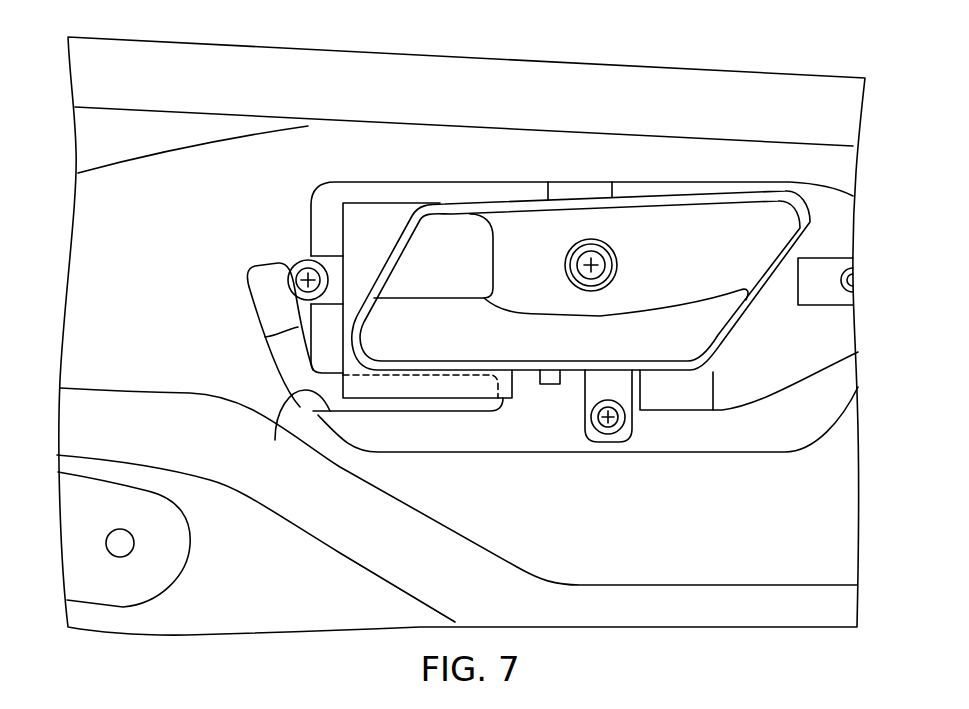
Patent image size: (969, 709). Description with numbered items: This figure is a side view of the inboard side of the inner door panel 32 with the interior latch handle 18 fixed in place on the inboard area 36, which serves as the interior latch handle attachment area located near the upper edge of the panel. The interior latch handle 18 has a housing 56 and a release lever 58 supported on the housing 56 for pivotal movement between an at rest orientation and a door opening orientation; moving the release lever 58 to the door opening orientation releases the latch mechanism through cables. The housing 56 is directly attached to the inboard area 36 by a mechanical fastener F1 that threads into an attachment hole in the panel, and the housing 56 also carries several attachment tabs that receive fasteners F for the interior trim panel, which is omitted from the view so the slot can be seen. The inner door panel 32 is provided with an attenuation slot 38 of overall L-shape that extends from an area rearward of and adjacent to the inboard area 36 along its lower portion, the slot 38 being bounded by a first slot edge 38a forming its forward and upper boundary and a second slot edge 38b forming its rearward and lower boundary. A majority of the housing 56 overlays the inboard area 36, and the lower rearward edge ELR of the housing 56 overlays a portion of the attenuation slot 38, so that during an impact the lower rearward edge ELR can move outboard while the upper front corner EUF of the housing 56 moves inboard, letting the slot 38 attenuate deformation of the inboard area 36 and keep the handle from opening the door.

The inner door panel 32 is at (763, 66).
The interior latch handle 18 is at (581, 229).
The inboard area 36 is at (381, 192).
The housing 56 is at (668, 200).
The release lever 58 is at (693, 318).
The attenuation slot 38 is at (261, 374).
The first slot edge 38a is at (265, 337).
The second slot edge 38b is at (275, 440).
The fasteners F is at (298, 268).
The mechanical fastener F1 is at (571, 256).
The upper front corner EUF is at (785, 200).
The lower rearward edge ELR is at (504, 400).